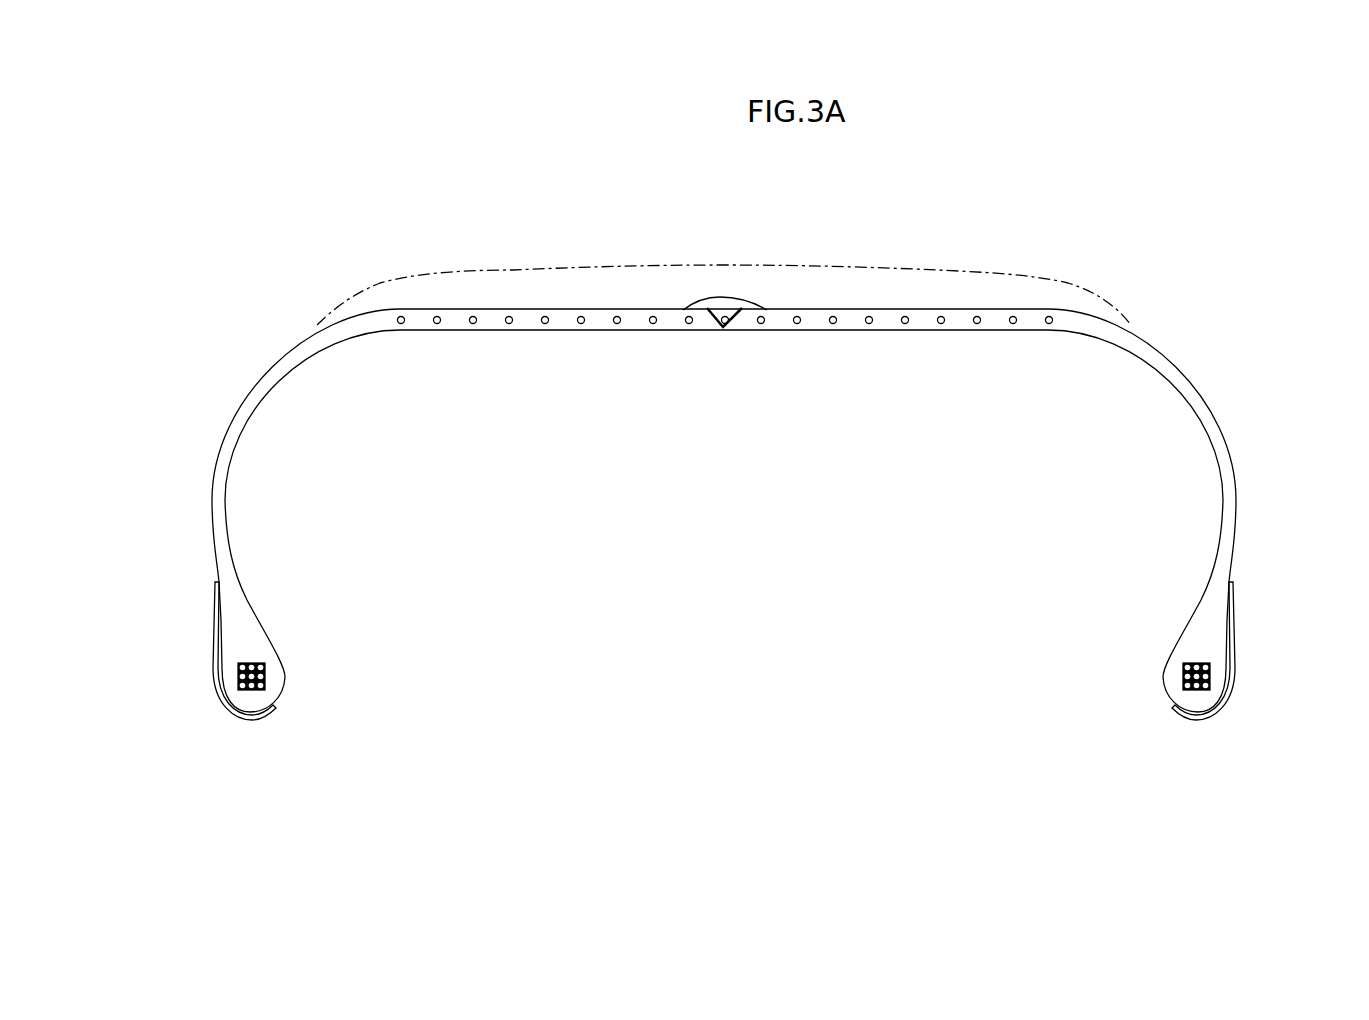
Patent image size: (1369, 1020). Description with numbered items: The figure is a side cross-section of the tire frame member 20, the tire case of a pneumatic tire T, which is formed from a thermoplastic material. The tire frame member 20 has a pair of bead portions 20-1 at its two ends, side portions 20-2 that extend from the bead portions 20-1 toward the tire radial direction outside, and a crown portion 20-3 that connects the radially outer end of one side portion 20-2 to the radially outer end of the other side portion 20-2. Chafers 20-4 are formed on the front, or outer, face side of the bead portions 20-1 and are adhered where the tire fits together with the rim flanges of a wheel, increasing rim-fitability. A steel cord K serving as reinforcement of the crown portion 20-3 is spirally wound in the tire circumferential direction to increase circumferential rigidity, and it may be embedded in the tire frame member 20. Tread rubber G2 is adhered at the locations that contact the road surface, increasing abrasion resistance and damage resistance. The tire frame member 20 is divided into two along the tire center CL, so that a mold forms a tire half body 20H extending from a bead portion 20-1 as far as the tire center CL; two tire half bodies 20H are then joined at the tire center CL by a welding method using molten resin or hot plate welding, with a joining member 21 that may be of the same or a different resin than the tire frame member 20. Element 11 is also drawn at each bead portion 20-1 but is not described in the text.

The tire frame member 20 is at (730, 491).
The bead portion 20-1 is at (283, 680).
The side portion 20-2 is at (212, 447).
The crown portion 20-3 is at (922, 309).
The chafer 20-4 is at (214, 640).
The tire half body 20H is at (287, 353).
The joining member 21 is at (740, 300).
The pad / electrode 11 is at (243, 690).
The steel cord K is at (437, 331).
The tread rubber G2 is at (662, 265).
The tire center CL is at (748, 243).
The pneumatic tire T is at (1077, 243).